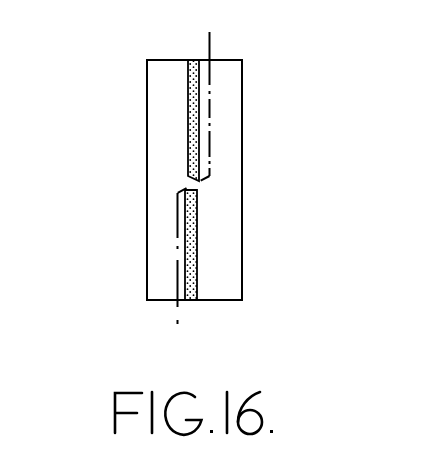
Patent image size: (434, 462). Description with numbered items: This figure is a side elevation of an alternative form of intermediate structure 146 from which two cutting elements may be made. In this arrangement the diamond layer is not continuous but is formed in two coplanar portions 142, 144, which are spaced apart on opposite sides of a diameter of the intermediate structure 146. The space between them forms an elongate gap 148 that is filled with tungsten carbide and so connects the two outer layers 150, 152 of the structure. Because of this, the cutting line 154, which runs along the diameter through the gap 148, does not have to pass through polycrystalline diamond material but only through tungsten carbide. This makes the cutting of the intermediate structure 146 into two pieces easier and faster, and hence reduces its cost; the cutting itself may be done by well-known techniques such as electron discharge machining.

The diamond layer portion 142 is at (189, 116).
The diamond layer portion 144 is at (186, 253).
The intermediate structure 146 is at (160, 80).
The elongate gap 148 is at (187, 182).
The outer layer 150 is at (158, 284).
The outer layer 152 is at (217, 287).
The cutting line 154 is at (210, 45).